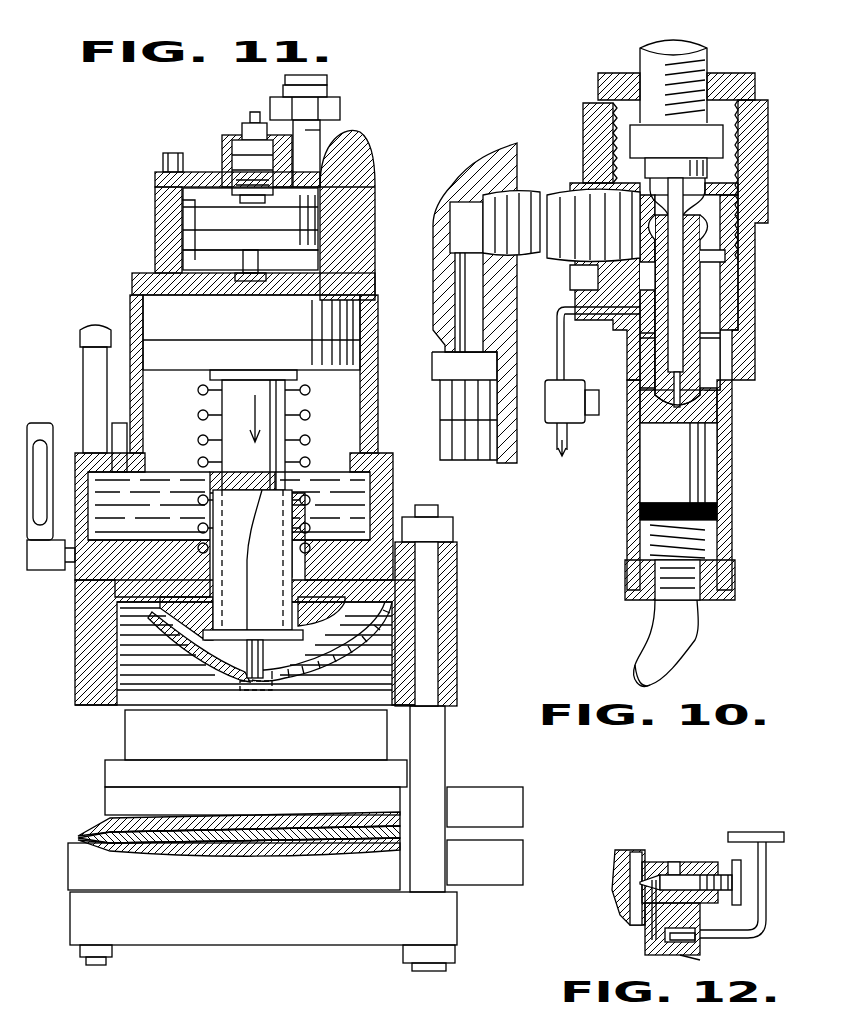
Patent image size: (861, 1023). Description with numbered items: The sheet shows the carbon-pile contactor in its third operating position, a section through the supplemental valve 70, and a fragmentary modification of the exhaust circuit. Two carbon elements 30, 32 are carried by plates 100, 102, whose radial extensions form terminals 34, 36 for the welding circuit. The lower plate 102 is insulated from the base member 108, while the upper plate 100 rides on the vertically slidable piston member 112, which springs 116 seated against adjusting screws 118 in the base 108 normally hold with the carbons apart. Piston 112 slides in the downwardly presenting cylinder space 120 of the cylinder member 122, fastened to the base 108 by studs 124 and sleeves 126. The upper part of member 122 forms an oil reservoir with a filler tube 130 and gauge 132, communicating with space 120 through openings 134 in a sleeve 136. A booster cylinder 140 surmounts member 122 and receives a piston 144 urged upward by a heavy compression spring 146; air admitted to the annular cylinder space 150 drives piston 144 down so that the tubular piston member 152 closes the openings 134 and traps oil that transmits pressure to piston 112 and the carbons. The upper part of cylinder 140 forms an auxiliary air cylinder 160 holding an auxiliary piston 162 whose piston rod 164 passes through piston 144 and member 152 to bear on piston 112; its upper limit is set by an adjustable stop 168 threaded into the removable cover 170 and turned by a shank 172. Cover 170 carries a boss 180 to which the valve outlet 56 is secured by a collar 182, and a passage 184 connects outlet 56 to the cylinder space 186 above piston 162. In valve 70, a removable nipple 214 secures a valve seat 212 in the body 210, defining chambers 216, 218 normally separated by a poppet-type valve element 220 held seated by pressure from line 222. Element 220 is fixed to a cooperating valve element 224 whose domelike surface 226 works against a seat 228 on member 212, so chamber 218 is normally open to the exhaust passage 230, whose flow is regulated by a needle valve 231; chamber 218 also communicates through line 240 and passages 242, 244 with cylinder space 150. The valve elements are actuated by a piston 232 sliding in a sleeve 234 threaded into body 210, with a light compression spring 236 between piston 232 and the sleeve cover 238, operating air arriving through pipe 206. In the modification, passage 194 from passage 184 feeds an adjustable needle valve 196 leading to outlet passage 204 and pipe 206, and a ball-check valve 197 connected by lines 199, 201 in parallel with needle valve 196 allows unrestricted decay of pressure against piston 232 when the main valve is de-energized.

In FIG. 11, the valve outlet 56 is at (330, 82).
In FIG. 11, the collar 182 is at (340, 100).
In FIG. 11, the boss 180 is at (330, 128).
In FIG. 11, the passage 184 is at (322, 133).
In FIG. 12, the passage 184 is at (640, 835).
In FIG. 11, the shank 172 is at (248, 112).
In FIG. 11, the adjustable stop member 168 is at (232, 165).
In FIG. 11, the removable cover 170 is at (155, 178).
In FIG. 11, the auxiliary air cylinder 160 is at (155, 215).
In FIG. 11, the cylinder space 186 is at (182, 228).
In FIG. 11, the auxiliary piston 162 is at (262, 229).
In FIG. 11, the piston rod 164 is at (243, 262).
In FIG. 11, the annular cylinder space 150 is at (132, 287).
In FIG. 11, the booster cylinder 140 is at (130, 308).
In FIG. 11, the piston 144 is at (266, 331).
In FIG. 10, the piston 144 is at (440, 470).
In FIG. 11, the compression spring 146 is at (285, 430).
In FIG. 11, the tubular piston member 152 is at (290, 430).
In FIG. 11, the filler tube 130 is at (83, 362).
In FIG. 11, the gauge 132 is at (42, 423).
In FIG. 11, the openings 134 is at (234, 510).
In FIG. 11, the sleeve 136 is at (262, 593).
In FIG. 11, the cylinder space 120 is at (330, 625).
In FIG. 11, the piston member 112 is at (355, 688).
In FIG. 11, the cylinder member 122 is at (457, 615).
In FIG. 11, the studs 124 is at (430, 650).
In FIG. 11, the sleeves 126 is at (445, 722).
In FIG. 11, the plate 100 is at (312, 803).
In FIG. 11, the springs 116 is at (78, 838).
In FIG. 11, the carbon element 32 is at (235, 850).
In FIG. 11, the carbon element 30 is at (312, 850).
In FIG. 11, the plate 102 is at (160, 881).
In FIG. 11, the base member 108 is at (260, 923).
In FIG. 11, the adjusting screws 118 is at (86, 965).
In FIG. 11, the terminal 34 is at (523, 800).
In FIG. 11, the terminal 36 is at (523, 860).
In FIG. 10, the line 222 is at (700, 48).
In FIG. 10, the nipple 214 is at (740, 73).
In FIG. 10, the chamber 216 is at (583, 140).
In FIG. 10, the valve element 220 is at (660, 158).
In FIG. 10, the valve seat 212 is at (700, 215).
In FIG. 10, the valve chamber 218 is at (715, 232).
In FIG. 10, the seat 228 is at (725, 255).
In FIG. 10, the valve body 210 is at (710, 272).
In FIG. 10, the valve element 224 is at (720, 298).
In FIG. 10, the line 240 is at (560, 200).
In FIG. 10, the passage 242 is at (465, 202).
In FIG. 10, the passage 244 is at (455, 300).
In FIG. 10, the domelike surface 226 is at (598, 300).
In FIG. 10, the exhaust passage 230 is at (575, 307).
In FIG. 10, the needle valve 231 is at (575, 423).
In FIG. 10, the supplemental valve 70 is at (732, 475).
In FIG. 10, the sleeve 234 is at (725, 412).
In FIG. 10, the piston 232 is at (695, 445).
In FIG. 10, the compression spring 236 is at (700, 535).
In FIG. 10, the sleeve cover 238 is at (735, 590).
In FIG. 10, the pipe 206 is at (672, 665).
In FIG. 12, the pipe 206 is at (764, 832).
In FIG. 12, the passage 194 is at (668, 875).
In FIG. 12, the outlet passage 204 is at (674, 862).
In FIG. 12, the needle valve 196 is at (695, 875).
In FIG. 12, the line 199 is at (645, 935).
In FIG. 12, the ball-check valve 197 is at (702, 960).
In FIG. 12, the line 201 is at (780, 928).